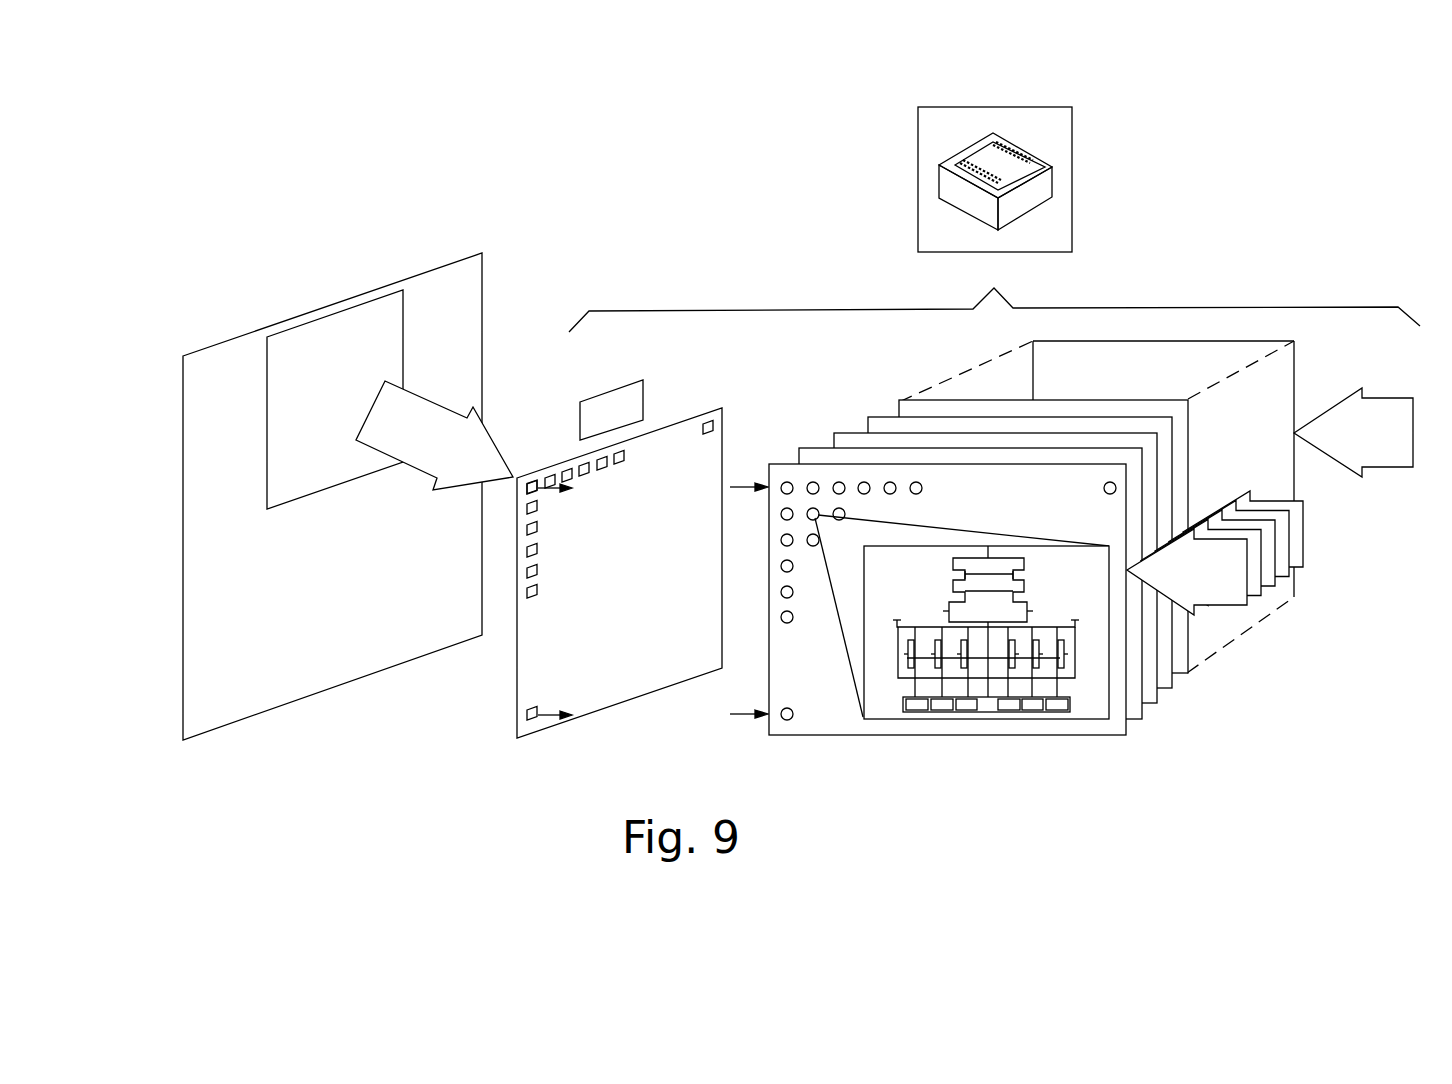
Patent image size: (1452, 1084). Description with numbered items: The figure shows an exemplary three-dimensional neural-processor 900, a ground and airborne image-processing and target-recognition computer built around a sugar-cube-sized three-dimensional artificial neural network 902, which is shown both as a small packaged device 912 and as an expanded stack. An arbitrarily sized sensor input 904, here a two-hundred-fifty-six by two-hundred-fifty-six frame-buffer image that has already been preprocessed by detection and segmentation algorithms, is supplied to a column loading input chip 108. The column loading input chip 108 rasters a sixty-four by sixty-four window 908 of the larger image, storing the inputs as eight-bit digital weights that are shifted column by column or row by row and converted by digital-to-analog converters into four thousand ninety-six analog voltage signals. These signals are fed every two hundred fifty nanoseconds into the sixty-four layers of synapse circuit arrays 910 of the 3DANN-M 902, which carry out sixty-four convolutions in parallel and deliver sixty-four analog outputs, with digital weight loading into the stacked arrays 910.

The sensor input 904 is at (347, 298).
The column loading input chip (CLIC) 108 is at (610, 392).
The 64x64 window of image data 908 is at (517, 697).
The three-dimensional neural-processor (N3DP) 900 is at (1010, 302).
The chip package 912 is at (1072, 138).
The three-dimensional artificial neural network (3DANN-M) 902 is at (1097, 700).
The synapse circuit arrays (3DANN-M stack) 910 is at (1302, 532).